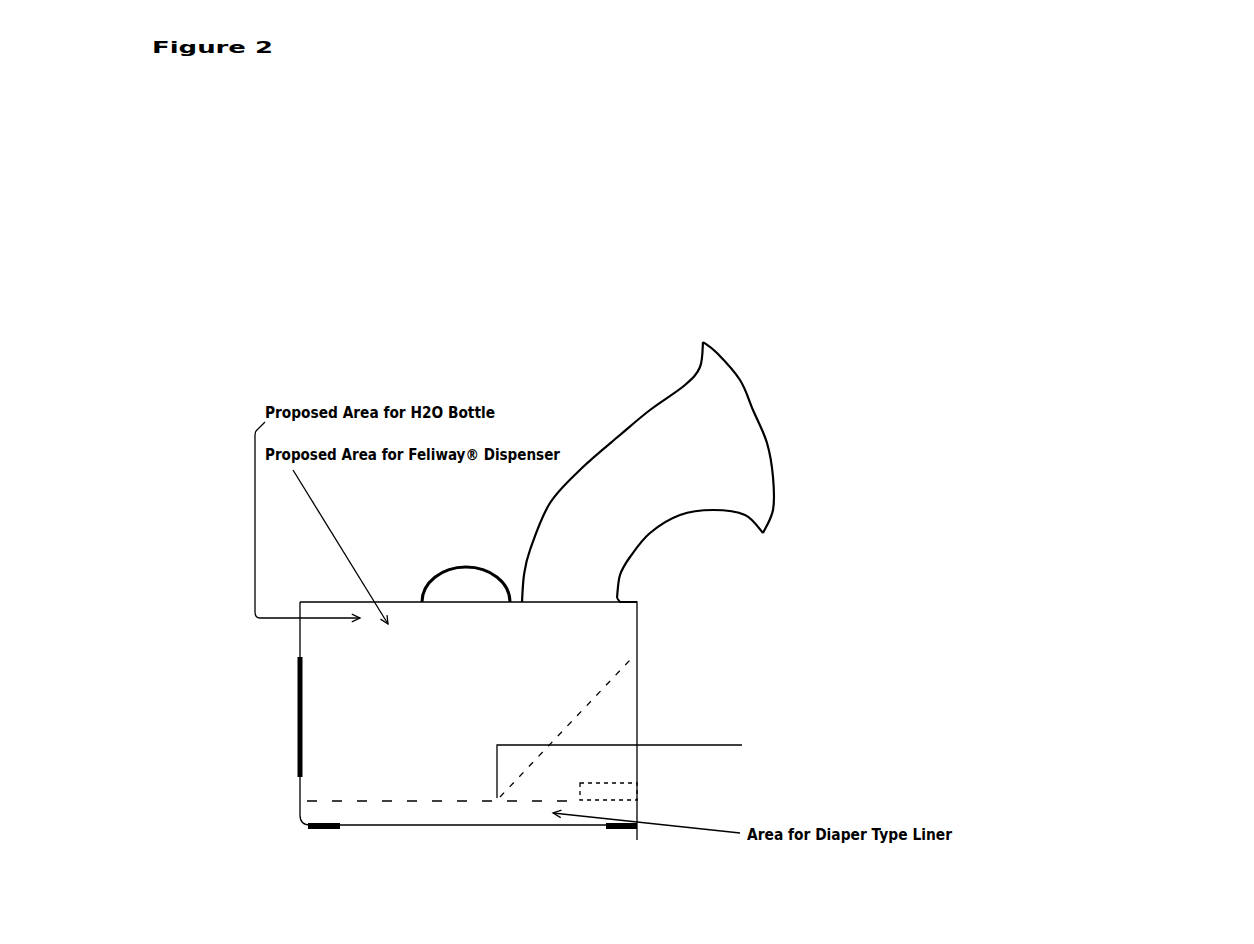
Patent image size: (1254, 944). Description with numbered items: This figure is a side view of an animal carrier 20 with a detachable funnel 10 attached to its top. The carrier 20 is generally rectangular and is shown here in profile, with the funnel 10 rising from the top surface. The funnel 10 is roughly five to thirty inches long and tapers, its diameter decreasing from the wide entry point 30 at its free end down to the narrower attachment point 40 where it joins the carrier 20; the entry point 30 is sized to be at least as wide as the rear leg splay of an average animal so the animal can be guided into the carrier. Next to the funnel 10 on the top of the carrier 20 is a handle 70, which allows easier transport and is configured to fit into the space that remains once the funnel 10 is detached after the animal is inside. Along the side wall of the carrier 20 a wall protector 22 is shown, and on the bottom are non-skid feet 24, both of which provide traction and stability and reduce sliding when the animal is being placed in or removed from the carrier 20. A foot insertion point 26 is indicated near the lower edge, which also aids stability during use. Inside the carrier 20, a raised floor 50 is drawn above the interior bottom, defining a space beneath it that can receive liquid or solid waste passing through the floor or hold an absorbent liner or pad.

The attachable/detachable funnel 10 is at (805, 342).
The animal carrier 20 is at (438, 698).
The wall protector 22 is at (282, 674).
The non-skid feet 24 is at (637, 828).
The foot insertion point 26 is at (624, 795).
The entry point 30 is at (778, 453).
The attachment point 40 is at (620, 589).
The raised floor 50 is at (493, 790).
The handle 70 is at (434, 578).